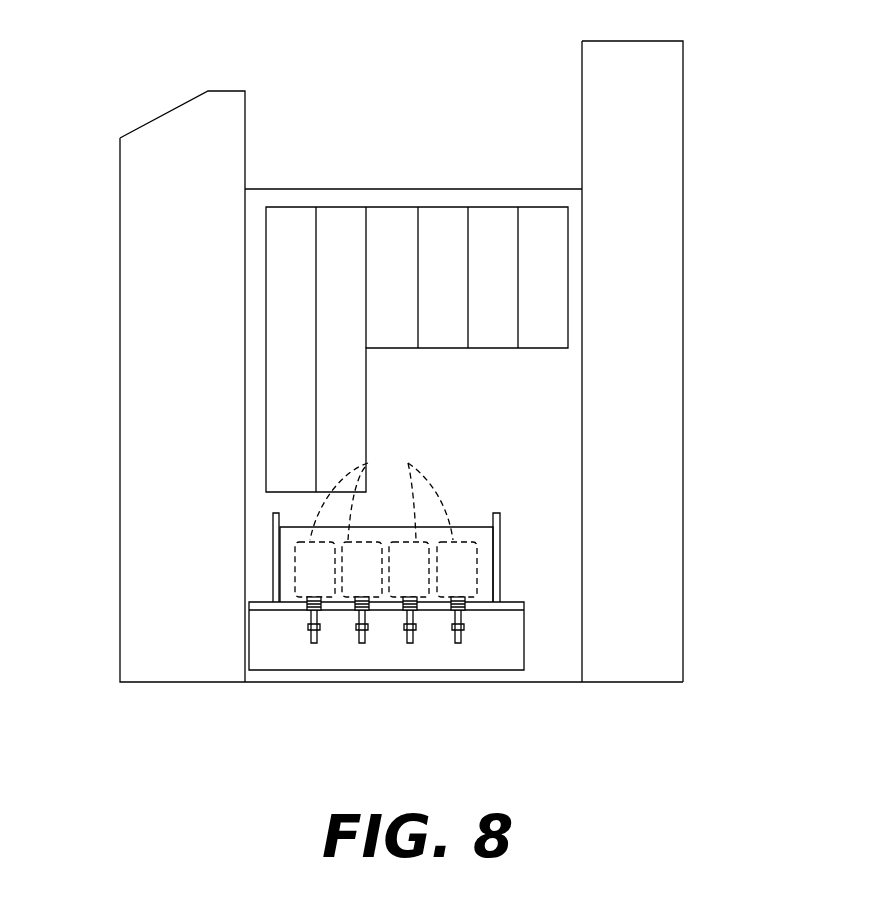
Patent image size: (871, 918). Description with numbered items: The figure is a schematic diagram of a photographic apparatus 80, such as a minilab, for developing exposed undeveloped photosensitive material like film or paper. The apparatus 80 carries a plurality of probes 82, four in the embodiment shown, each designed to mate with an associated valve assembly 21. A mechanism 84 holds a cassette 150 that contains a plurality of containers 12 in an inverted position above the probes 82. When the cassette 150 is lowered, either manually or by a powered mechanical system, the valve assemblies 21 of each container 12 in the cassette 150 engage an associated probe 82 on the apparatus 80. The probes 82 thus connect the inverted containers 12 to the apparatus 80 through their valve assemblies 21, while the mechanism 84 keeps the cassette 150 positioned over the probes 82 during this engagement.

The photographic apparatus 80 is at (752, 102).
The container 12 is at (368, 463).
The cassette 150 is at (472, 526).
The mechanism 84 is at (502, 556).
The valve assembly 21 is at (305, 616).
The probe 82 is at (314, 645).